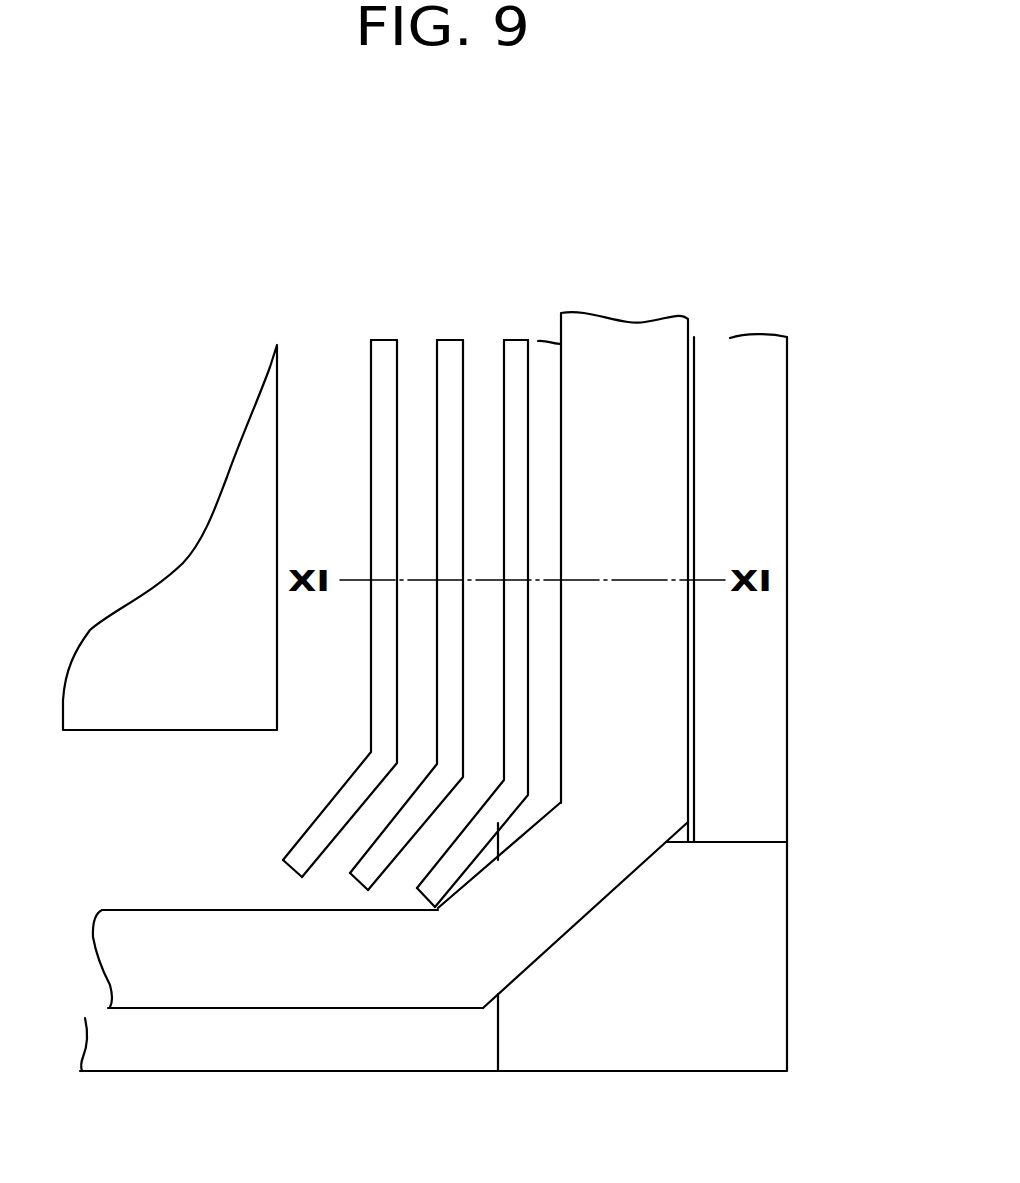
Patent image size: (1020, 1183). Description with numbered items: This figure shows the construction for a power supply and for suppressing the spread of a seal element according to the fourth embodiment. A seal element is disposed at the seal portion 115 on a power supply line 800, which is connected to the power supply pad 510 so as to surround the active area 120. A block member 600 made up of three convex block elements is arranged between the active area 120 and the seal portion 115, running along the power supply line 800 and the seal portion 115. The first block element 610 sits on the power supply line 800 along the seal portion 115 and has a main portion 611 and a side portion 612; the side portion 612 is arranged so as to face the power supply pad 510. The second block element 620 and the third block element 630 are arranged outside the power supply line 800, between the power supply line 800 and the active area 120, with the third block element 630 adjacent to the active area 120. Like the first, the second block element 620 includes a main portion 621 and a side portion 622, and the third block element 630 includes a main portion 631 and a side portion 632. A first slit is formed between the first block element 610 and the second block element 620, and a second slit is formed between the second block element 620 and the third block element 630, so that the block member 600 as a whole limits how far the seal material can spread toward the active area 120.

The seal portion 115 is at (652, 367).
The active area 120 is at (200, 578).
The power supply pad 510 is at (745, 947).
The block member 600 is at (155, 747).
The first block element 610 is at (437, 864).
The main portion 611 is at (518, 357).
The side portion 612 is at (450, 863).
The second block element 620 is at (391, 820).
The main portion 621 is at (452, 357).
The side portion 622 is at (370, 863).
The third block element 630 is at (345, 779).
The main portion 631 is at (385, 357).
The side portion 632 is at (293, 863).
The power supply line 800 is at (533, 707).